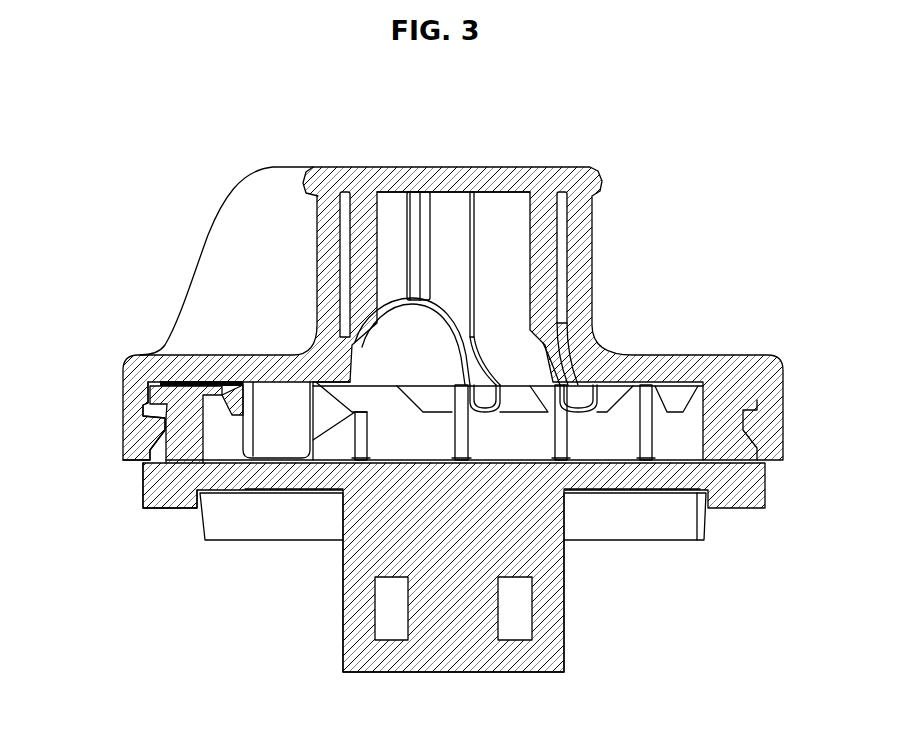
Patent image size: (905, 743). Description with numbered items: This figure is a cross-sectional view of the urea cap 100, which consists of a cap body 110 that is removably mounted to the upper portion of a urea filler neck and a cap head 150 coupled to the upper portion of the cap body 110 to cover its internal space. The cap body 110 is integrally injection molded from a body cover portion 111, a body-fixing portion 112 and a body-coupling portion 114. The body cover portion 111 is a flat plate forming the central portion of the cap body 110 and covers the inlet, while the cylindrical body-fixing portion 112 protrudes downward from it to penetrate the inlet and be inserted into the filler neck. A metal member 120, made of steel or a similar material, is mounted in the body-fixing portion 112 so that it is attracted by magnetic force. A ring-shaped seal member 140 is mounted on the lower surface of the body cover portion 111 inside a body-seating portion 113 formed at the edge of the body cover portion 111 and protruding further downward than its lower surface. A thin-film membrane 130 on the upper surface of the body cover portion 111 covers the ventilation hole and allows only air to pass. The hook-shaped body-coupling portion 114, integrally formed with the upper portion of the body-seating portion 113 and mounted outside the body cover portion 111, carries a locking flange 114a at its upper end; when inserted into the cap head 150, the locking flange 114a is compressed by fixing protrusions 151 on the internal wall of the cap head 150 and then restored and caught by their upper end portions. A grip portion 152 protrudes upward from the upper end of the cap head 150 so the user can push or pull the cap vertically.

The urea cap 100 is at (73, 149).
The cap body 110 is at (778, 489).
The body cover portion 111 is at (283, 477).
The body-fixing portion 112 is at (565, 636).
The body-seating portion 113 is at (175, 508).
The body-coupling portion 114 is at (172, 435).
The locking flange 114a is at (155, 402).
The metal member 120 is at (515, 632).
The membrane 130 is at (600, 463).
The seal member 140 is at (704, 527).
The cap head 150 is at (606, 167).
The fixing protrusions 151 is at (752, 420).
The grip portion 152 is at (365, 173).